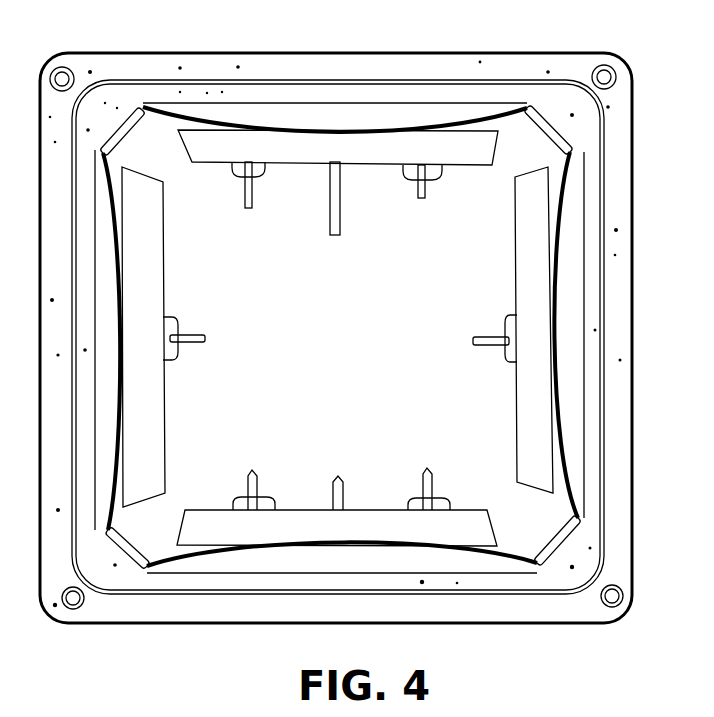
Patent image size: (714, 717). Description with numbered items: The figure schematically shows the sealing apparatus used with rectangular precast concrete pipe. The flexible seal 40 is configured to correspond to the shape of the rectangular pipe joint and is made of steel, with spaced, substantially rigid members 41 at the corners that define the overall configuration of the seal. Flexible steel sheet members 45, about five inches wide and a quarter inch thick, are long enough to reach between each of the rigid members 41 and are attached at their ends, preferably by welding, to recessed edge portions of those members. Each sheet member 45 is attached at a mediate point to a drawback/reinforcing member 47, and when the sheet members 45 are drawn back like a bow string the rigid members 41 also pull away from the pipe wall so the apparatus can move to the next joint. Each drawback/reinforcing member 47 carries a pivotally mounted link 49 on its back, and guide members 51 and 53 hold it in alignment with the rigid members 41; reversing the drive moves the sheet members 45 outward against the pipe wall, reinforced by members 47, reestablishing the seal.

The flexible seal 40 is at (424, 128).
The rigid member 41 is at (125, 125).
The flexible steel sheet member 45 is at (557, 300).
The drawback/reinforcing member 47 is at (310, 152).
The pivotally mounted link 49 is at (338, 213).
The guide member 51 is at (247, 195).
The guide member 53 is at (425, 203).